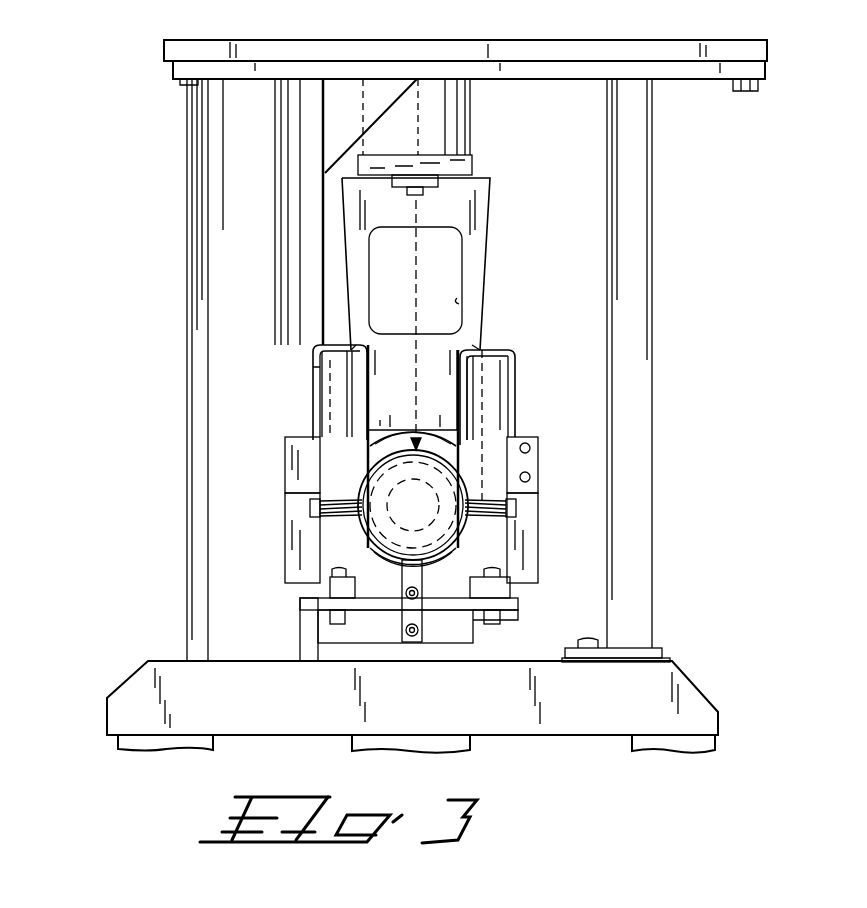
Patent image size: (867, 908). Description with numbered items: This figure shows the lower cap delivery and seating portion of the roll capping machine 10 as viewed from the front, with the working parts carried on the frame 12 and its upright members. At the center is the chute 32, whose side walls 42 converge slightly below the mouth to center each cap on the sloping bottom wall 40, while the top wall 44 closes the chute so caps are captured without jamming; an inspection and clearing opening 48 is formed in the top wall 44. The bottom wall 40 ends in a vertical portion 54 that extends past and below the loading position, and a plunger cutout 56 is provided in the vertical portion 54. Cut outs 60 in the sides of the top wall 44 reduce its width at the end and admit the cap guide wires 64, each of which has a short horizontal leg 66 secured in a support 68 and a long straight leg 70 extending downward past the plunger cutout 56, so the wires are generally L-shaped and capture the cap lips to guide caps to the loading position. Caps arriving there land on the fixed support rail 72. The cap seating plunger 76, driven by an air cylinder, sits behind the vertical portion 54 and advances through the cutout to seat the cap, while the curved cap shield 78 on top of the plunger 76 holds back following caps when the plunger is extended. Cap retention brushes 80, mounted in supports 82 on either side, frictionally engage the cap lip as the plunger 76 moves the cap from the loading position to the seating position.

The roll capping machine 10 is at (140, 157).
The frame 12 is at (655, 305).
The chute 32 is at (488, 242).
The bottom wall 40 is at (456, 282).
The side walls 42 is at (342, 207).
The top wall 44 is at (406, 375).
The inspection and clearing opening 48 is at (459, 302).
The vertical portion 54 is at (458, 588).
The plunger cutout 56 is at (450, 437).
The cut outs 60 is at (458, 391).
The cap guide wires 64 is at (337, 341).
The short horizontal leg 66 is at (323, 347).
The support 68 is at (313, 367).
The long straight leg 70 is at (357, 442).
The support rail 72 is at (433, 623).
The cap seating plunger 76 is at (444, 455).
The cap shield 78 is at (380, 428).
The cap retention brushes 80 is at (343, 505).
The supports 82 is at (293, 508).